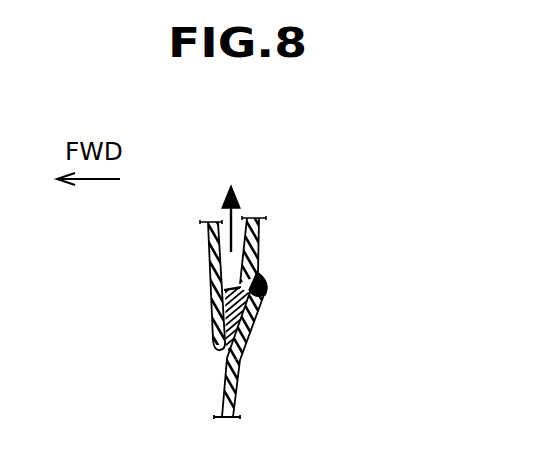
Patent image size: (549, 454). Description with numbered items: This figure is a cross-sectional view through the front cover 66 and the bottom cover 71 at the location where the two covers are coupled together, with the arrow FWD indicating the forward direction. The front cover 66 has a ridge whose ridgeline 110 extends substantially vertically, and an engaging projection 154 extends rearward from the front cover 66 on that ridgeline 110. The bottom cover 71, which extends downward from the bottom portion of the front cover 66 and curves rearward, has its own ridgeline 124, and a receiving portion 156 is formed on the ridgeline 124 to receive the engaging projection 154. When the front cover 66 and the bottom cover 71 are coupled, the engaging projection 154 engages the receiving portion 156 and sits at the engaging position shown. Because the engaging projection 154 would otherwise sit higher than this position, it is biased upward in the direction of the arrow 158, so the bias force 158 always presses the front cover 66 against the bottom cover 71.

The front cover 66 is at (206, 270).
The bottom cover 71 is at (254, 335).
The ridgeline 110 is at (210, 247).
The ridgeline 124 is at (223, 389).
The engaging projection 154 is at (213, 300).
The receiving portion 156 is at (265, 283).
The bias force direction 158 is at (232, 215).